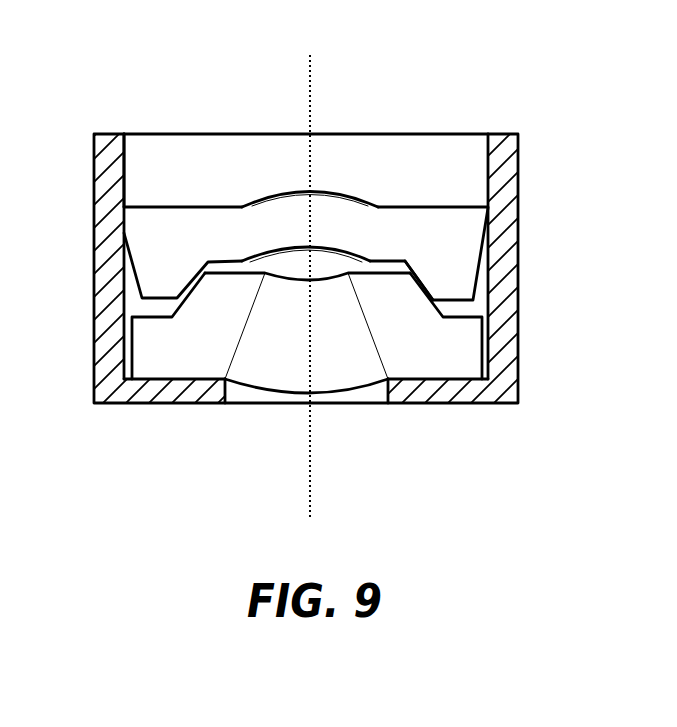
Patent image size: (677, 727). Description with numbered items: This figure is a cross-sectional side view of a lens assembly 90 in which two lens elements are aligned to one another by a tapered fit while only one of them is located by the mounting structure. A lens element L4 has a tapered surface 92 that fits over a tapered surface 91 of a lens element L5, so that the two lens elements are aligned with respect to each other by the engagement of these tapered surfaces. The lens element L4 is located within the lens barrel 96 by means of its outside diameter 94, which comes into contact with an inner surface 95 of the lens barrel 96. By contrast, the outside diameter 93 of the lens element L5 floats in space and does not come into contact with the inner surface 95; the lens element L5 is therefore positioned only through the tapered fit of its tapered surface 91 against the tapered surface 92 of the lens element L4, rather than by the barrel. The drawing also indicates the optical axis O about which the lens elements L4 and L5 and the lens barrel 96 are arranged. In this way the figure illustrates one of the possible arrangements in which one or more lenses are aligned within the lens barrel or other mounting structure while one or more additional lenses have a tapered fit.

The lens assembly 90 is at (578, 81).
The tapered surface 91 is at (405, 263).
The tapered surface 92 is at (410, 273).
The outside diameter 93 is at (483, 358).
The outside diameter 94 is at (485, 228).
The inner surface 95 is at (126, 153).
The lens barrel 96 is at (122, 396).
The lens element L4 is at (473, 215).
The lens element L5 is at (210, 353).
The optical axis O is at (310, 482).